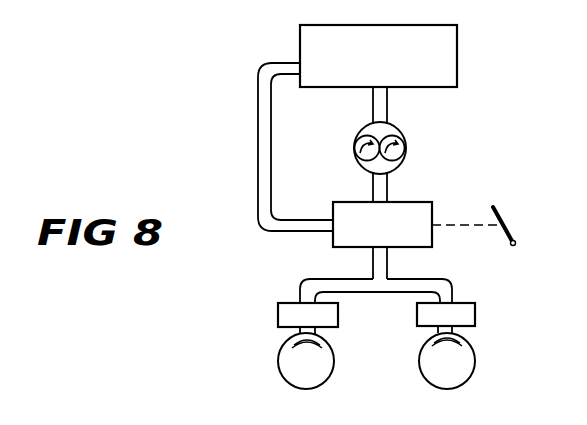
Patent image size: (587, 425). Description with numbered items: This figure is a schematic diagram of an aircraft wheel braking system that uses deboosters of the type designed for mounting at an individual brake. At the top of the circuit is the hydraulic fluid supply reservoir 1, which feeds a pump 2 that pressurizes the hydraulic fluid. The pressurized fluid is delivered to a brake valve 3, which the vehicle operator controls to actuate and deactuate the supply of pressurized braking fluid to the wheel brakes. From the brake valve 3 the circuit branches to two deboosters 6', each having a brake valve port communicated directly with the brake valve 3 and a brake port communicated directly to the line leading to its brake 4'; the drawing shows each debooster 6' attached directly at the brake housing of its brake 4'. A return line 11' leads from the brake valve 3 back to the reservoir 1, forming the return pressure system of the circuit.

The hydraulic fluid supply reservoir 1 is at (453, 57).
The pump 2 is at (398, 132).
The brake valve 3 is at (417, 202).
The return line 11' is at (274, 147).
The debooster 6' is at (385, 300).
The brake 4' is at (392, 361).